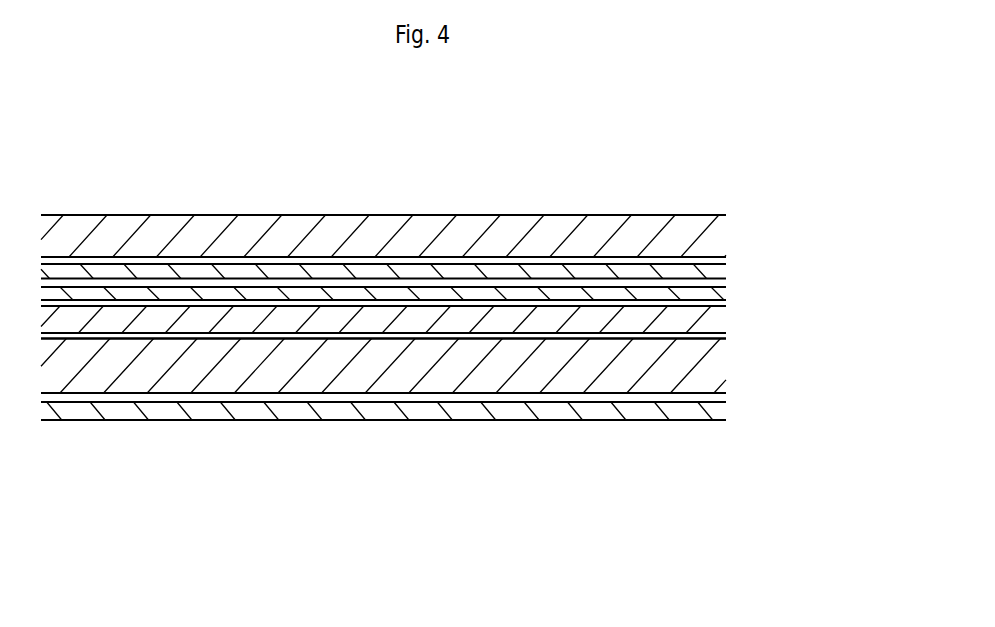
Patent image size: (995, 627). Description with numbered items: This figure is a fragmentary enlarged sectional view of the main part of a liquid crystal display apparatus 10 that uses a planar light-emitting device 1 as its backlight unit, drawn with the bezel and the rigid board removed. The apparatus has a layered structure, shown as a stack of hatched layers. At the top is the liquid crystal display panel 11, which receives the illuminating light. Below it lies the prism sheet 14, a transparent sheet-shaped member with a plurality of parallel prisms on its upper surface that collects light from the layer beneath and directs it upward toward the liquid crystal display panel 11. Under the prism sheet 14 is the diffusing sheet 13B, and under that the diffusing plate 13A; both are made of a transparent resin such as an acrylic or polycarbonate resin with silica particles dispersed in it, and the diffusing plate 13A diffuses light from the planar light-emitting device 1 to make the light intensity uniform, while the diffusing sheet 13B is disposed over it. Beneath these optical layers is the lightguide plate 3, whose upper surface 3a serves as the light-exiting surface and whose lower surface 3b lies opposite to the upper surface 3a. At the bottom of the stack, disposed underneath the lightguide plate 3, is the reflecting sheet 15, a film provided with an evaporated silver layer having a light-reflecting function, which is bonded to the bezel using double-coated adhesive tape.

The liquid crystal display apparatus 10 is at (567, 167).
The liquid crystal display panel 11 is at (474, 215).
The prism sheet 14 is at (453, 278).
The diffusing sheet 13B is at (522, 300).
The diffusing plate 13A is at (617, 333).
The planar light-emitting device 1 is at (423, 372).
The lightguide plate 3 is at (123, 395).
The upper surface 3a is at (694, 337).
The lower surface 3b is at (678, 394).
The reflecting sheet 15 is at (353, 420).